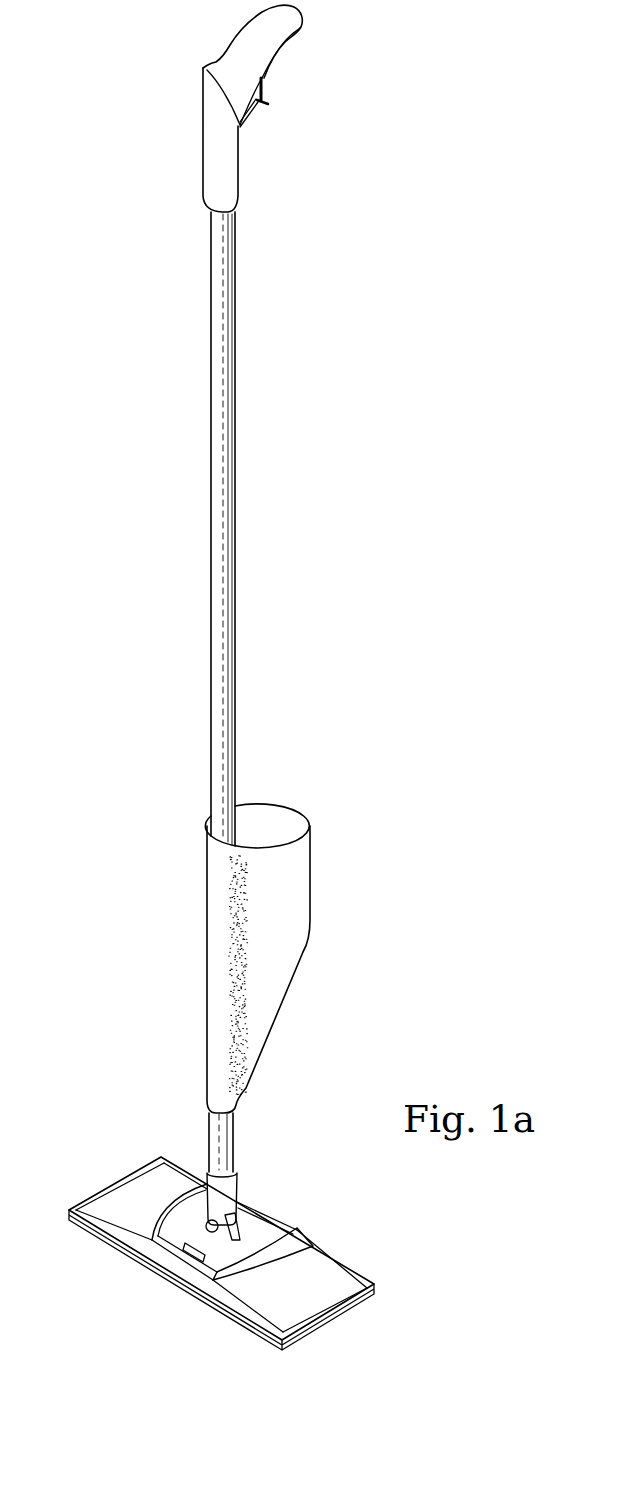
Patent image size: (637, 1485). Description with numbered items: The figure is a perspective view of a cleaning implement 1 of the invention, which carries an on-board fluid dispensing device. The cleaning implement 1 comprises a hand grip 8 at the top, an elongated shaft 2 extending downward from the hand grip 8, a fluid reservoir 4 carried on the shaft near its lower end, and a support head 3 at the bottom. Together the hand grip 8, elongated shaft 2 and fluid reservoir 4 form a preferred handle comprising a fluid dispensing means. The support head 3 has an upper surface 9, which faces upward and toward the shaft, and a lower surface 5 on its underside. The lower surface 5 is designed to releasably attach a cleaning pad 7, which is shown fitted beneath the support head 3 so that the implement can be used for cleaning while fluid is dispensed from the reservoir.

The cleaning implement 1 is at (320, 232).
The elongated shaft 2 is at (233, 532).
The support head 3 is at (329, 1268).
The fluid reservoir 4 is at (310, 918).
The lower surface 5 is at (112, 1238).
The cleaning pad 7 is at (213, 1300).
The hand grip 8 is at (203, 128).
The upper surface 9 is at (143, 1187).